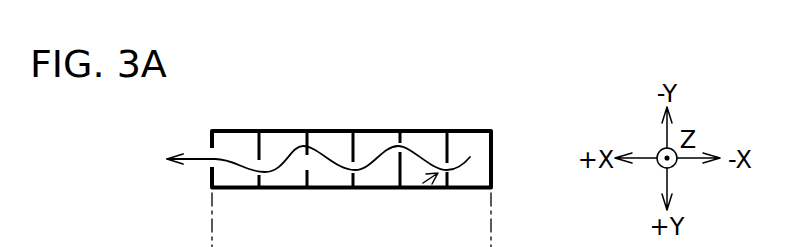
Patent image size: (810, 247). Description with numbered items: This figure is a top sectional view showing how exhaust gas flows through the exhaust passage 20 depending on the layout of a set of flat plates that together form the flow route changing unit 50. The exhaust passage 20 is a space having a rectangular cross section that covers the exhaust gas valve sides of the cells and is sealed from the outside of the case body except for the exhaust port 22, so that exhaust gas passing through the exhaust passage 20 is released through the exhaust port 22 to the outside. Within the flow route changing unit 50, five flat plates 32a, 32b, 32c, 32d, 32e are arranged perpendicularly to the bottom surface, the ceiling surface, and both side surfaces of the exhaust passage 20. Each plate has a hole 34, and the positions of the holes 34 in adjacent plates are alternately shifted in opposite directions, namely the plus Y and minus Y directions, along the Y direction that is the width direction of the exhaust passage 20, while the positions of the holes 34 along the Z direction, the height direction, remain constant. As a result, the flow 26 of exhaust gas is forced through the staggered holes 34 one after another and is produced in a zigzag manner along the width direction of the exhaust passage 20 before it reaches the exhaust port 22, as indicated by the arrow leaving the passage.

The exhaust passage 20 is at (484, 143).
The exhaust port 22 is at (208, 167).
The flow 26 is at (324, 176).
The flat plate 32a is at (446, 136).
The flat plate 32b is at (399, 134).
The flat plate 32c is at (352, 134).
The flat plate 32d is at (306, 134).
The flat plate 32e is at (257, 134).
The hole 34 is at (420, 189).
The flow route changing unit 50 is at (205, 72).